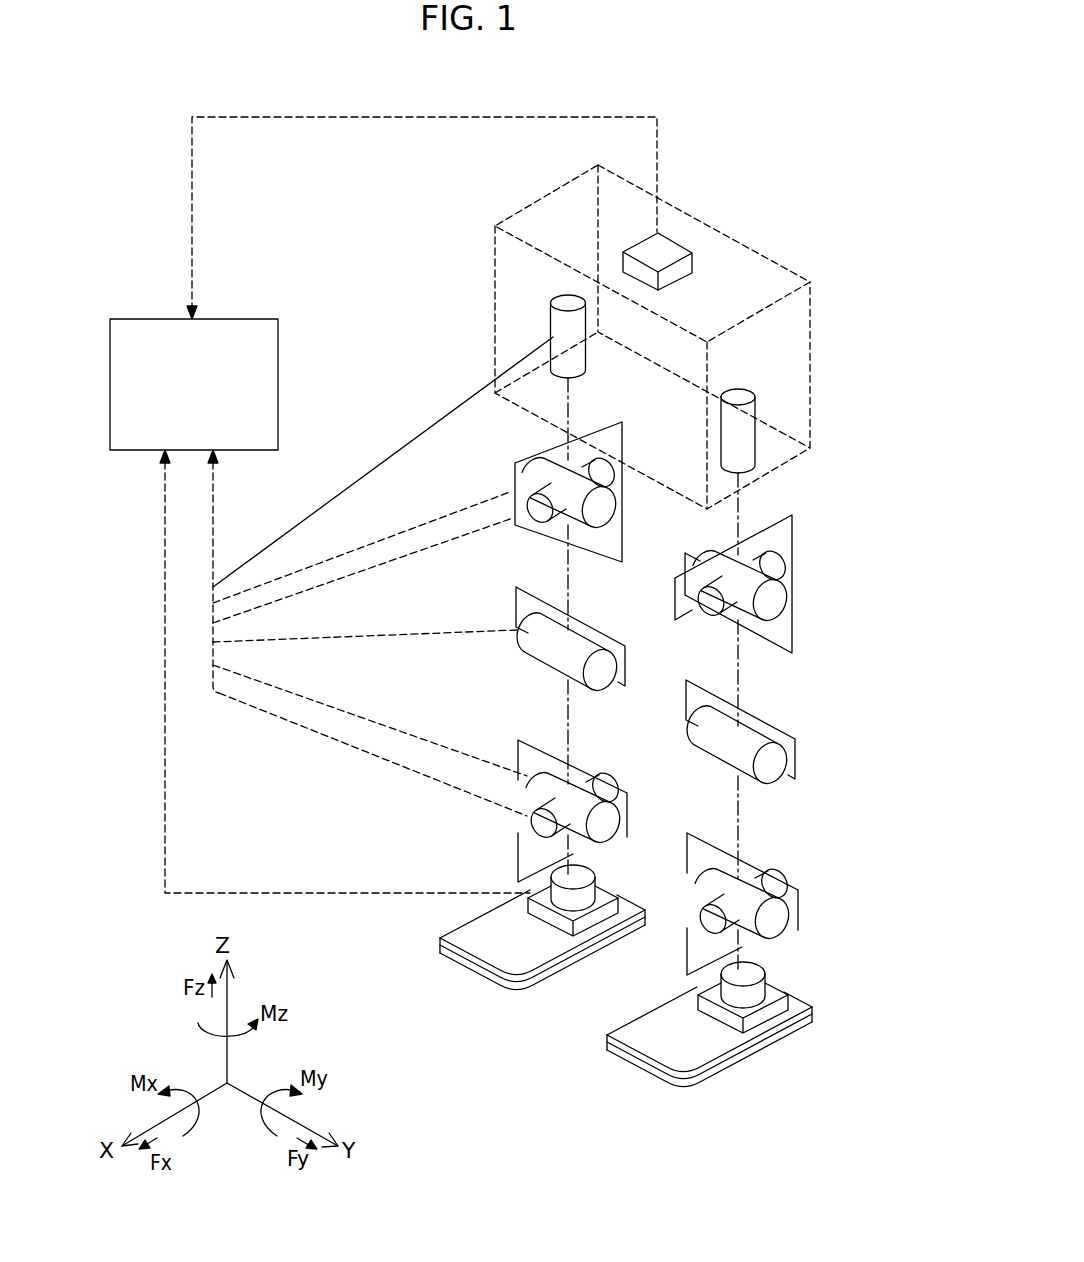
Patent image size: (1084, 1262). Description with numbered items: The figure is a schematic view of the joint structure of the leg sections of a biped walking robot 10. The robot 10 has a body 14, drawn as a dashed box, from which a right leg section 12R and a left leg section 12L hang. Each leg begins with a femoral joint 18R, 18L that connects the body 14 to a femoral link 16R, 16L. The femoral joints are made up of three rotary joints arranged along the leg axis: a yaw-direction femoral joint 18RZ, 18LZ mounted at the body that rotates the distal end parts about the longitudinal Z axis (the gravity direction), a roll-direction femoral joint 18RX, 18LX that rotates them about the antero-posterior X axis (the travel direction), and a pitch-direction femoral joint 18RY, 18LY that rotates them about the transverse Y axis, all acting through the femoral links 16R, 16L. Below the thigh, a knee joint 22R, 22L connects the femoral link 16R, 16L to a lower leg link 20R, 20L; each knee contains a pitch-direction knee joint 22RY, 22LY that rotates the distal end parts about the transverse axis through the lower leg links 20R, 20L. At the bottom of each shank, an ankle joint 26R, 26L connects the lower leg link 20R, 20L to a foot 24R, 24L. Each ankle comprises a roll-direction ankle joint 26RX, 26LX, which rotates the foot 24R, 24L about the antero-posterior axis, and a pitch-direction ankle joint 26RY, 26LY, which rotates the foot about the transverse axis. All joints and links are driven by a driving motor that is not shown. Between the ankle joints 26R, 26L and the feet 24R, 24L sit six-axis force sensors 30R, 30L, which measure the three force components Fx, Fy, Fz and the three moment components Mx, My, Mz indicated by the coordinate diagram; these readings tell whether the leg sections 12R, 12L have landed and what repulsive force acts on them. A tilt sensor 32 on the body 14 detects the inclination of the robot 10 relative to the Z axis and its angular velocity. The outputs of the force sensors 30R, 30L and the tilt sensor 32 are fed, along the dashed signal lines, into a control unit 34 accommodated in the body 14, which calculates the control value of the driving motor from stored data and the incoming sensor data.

The biped walking robot 10 is at (806, 263).
The body 14 is at (748, 246).
The tilt sensor 32 is at (672, 248).
The control unit 34 is at (248, 319).
The yaw-direction femoral joint 18RZ is at (550, 333).
The yaw-direction femoral joint 18LZ is at (751, 455).
The femoral joint 18R is at (559, 492).
The roll-direction femoral joint 18RX is at (600, 495).
The pitch-direction femoral joint 18RY is at (609, 500).
The femoral joint 18L is at (789, 584).
The roll-direction femoral joint 18LX is at (787, 588).
The pitch-direction femoral joint 18LY is at (790, 586).
The femoral link 16R is at (570, 575).
The femoral link 16L is at (742, 668).
The knee joint 22R is at (542, 654).
The pitch-direction knee joint 22RY is at (593, 667).
The knee joint 22L is at (791, 736).
The pitch-direction knee joint 22LY is at (787, 749).
The lower leg link 20R is at (568, 727).
The lower leg link 20L is at (738, 820).
The ankle joint 26R is at (539, 806).
The roll-direction ankle joint 26RX is at (599, 786).
The pitch-direction ankle joint 26RY is at (599, 828).
The ankle joint 26L is at (793, 896).
The roll-direction ankle joint 26LX is at (759, 878).
The pitch-direction ankle joint 26LY is at (766, 922).
The leg section 12R is at (488, 952).
The leg section 12L is at (752, 1040).
The foot 24R is at (501, 955).
The foot 24L is at (710, 1050).
The six-axis force sensor 30R is at (565, 902).
The six-axis force sensor 30L is at (722, 992).